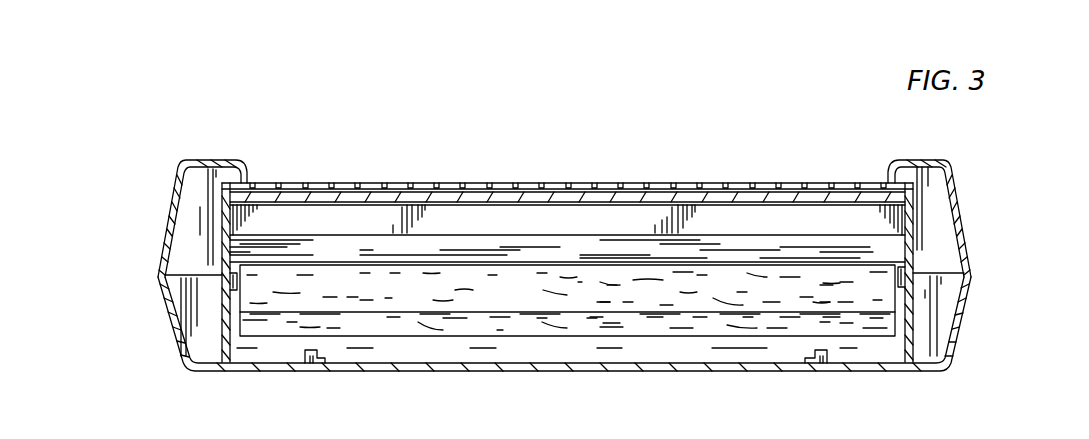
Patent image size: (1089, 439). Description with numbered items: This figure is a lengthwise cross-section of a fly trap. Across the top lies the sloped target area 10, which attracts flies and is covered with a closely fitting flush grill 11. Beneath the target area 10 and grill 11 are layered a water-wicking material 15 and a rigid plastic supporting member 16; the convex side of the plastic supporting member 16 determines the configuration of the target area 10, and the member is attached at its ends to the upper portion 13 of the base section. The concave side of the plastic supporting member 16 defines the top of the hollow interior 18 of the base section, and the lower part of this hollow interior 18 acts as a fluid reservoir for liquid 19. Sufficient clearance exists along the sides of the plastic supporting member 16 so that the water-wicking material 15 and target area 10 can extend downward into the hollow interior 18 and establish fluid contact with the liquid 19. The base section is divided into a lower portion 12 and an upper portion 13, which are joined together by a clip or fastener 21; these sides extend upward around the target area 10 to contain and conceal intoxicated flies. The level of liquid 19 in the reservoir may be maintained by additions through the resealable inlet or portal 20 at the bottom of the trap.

The sloped target area 10 is at (475, 190).
The flush grill 11 is at (433, 185).
The lower portion of the base section 12 is at (173, 332).
The upper portion of the base section 13 is at (172, 213).
The water-wicking material 15 is at (547, 196).
The rigid plastic supporting member 16 is at (630, 201).
The hollow interior 18 is at (486, 289).
The liquid 19 is at (645, 327).
The resealable inlet or portal 20 is at (315, 371).
The clip or fastener 21 is at (160, 273).